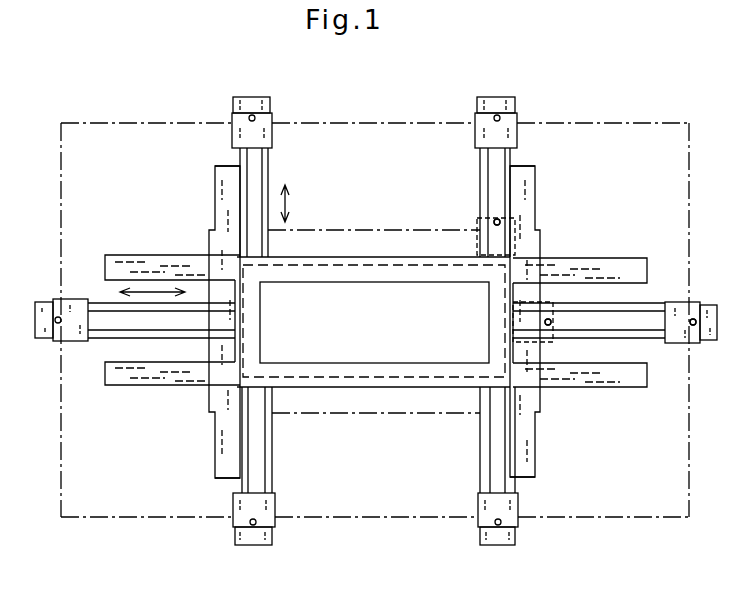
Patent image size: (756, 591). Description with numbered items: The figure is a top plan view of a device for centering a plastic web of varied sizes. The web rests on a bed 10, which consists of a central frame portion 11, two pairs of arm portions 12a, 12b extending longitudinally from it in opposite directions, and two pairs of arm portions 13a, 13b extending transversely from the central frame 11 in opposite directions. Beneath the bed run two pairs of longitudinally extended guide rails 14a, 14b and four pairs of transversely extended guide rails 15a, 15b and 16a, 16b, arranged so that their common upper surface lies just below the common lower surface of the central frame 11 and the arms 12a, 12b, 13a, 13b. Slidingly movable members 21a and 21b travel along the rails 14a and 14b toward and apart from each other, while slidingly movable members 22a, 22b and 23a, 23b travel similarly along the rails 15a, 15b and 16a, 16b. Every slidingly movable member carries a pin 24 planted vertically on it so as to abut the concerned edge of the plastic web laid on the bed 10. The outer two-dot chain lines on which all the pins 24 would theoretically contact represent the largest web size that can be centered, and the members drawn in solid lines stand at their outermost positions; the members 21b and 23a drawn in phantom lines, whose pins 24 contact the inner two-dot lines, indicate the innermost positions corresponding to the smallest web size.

The bed 10 is at (348, 256).
The central frame portion 11 is at (390, 258).
The arm portion 12a is at (152, 255).
The arm portion 12b is at (638, 258).
The arm portion 13a is at (215, 188).
The arm portion 13b is at (220, 455).
The guide rail 14a is at (100, 325).
The guide rail 14b is at (640, 335).
The guide rail 15a is at (262, 165).
The guide rail 15b is at (278, 474).
The guide rail 16a is at (505, 162).
The guide rail 16b is at (490, 432).
The slidingly movable member 21a is at (63, 340).
The slidingly movable member 21b is at (683, 308).
The slidingly movable member 22a is at (238, 128).
The slidingly movable member 22b is at (240, 498).
The slidingly movable member 23a is at (483, 135).
The slidingly movable member 23b is at (482, 496).
The pin 24 is at (700, 345).